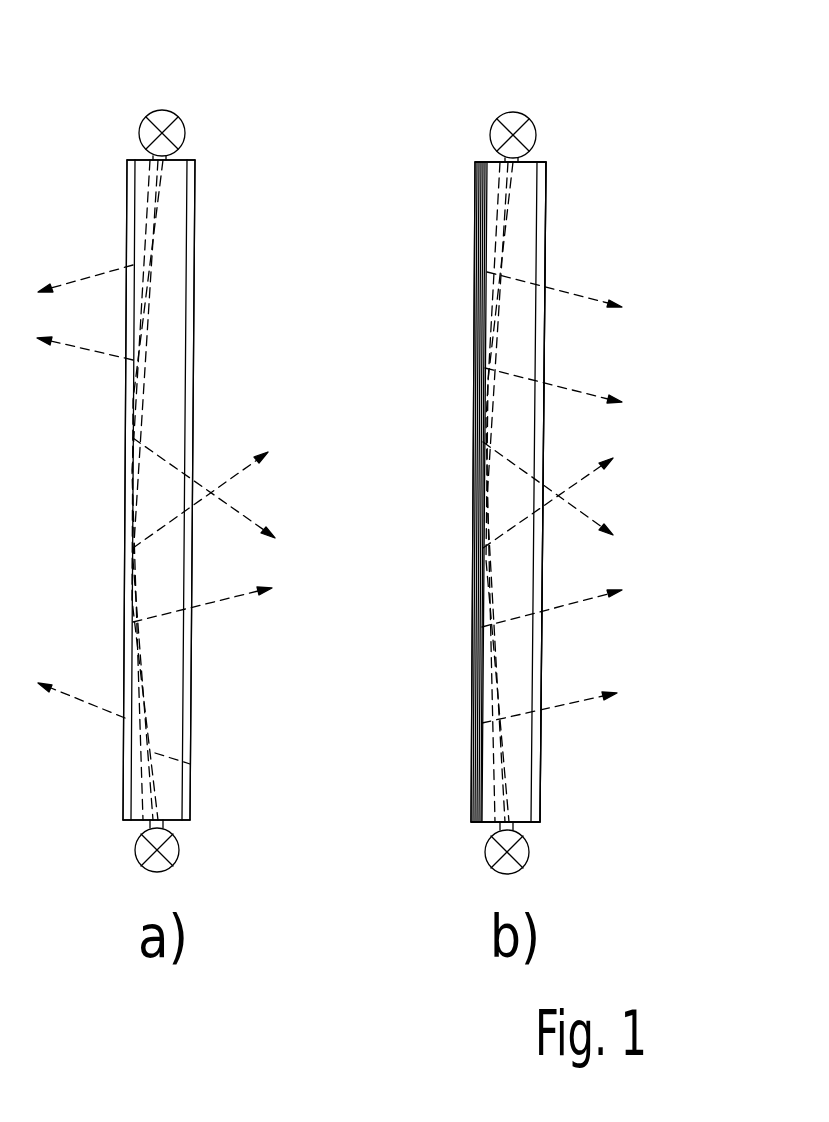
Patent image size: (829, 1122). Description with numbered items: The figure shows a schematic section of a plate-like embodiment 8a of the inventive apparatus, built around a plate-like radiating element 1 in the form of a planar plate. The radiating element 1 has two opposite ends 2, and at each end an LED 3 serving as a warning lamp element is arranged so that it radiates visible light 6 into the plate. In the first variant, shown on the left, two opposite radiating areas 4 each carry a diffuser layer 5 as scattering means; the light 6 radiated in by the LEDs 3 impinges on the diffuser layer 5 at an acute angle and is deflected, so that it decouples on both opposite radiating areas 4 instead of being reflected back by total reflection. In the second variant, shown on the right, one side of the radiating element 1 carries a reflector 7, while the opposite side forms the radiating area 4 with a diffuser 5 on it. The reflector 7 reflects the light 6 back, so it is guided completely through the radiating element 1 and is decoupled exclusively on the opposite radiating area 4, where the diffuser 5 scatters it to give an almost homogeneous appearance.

The radiating element 1 is at (175, 213).
The ends 2 is at (183, 151).
The LED 3 is at (145, 133).
The radiating area 4 is at (130, 235).
The diffuser layer 5 is at (195, 425).
The light 6 is at (90, 275).
The reflector 7 is at (477, 320).
The plate-like embodiment 8a is at (628, 66).